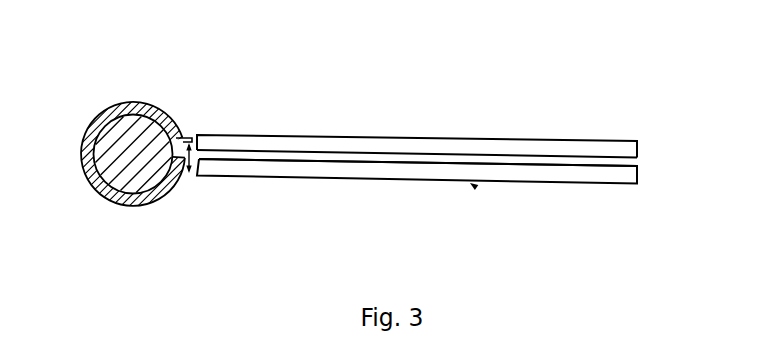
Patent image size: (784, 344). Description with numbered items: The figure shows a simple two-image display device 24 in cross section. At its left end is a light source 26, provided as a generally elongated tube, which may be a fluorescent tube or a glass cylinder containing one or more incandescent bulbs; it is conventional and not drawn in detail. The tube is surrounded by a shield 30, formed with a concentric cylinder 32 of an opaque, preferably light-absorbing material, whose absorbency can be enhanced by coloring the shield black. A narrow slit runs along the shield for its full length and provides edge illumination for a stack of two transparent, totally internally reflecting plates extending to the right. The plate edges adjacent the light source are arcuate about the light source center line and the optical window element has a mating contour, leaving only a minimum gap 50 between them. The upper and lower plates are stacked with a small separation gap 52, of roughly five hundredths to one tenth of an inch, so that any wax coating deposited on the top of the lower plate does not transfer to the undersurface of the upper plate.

The two-image display device 24 is at (471, 184).
The light source 26 is at (142, 183).
The shield 30 is at (153, 108).
The concentric cylinder 32 is at (92, 130).
The gap 50 is at (194, 135).
The separation gap 52 is at (353, 153).